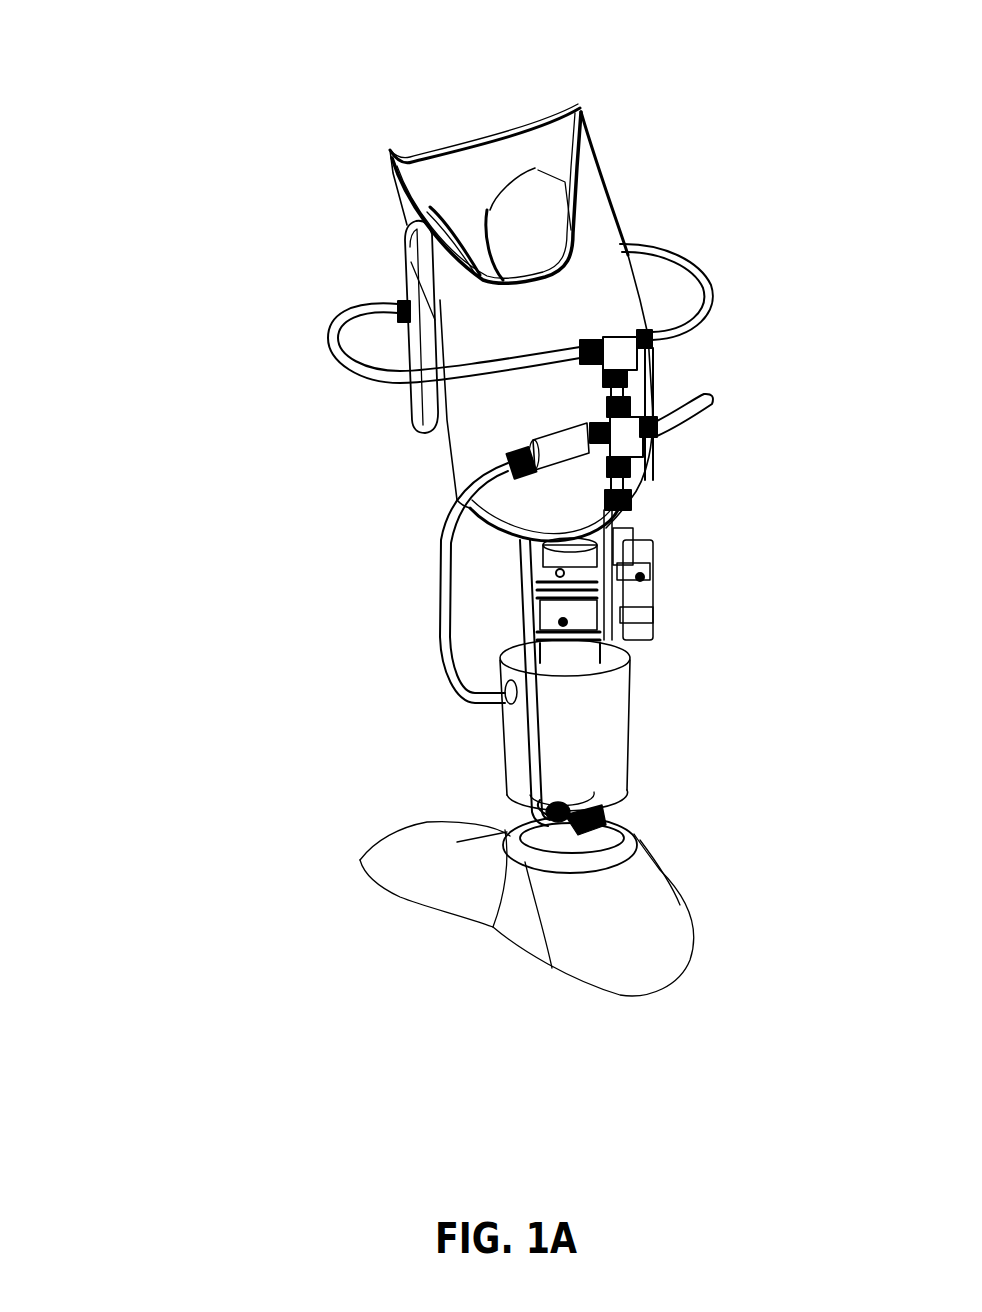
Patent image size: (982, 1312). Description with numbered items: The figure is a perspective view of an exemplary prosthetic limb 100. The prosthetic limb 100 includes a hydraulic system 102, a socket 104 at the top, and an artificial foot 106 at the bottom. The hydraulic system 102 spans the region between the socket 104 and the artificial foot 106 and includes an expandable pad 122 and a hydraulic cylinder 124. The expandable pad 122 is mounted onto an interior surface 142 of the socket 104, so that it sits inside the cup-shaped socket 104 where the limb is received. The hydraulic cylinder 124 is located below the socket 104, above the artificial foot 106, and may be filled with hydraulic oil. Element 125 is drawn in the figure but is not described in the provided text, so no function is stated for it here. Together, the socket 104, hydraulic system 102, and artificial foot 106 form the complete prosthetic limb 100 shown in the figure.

The prosthetic limb 100 is at (108, 121).
The hydraulic system 102 is at (713, 175).
The socket 104 is at (590, 132).
The artificial foot 106 is at (690, 943).
The expandable pad 122 is at (523, 173).
The hydraulic cylinder 124 is at (507, 744).
The tube 125 is at (530, 813).
The interior surface 142 is at (456, 173).